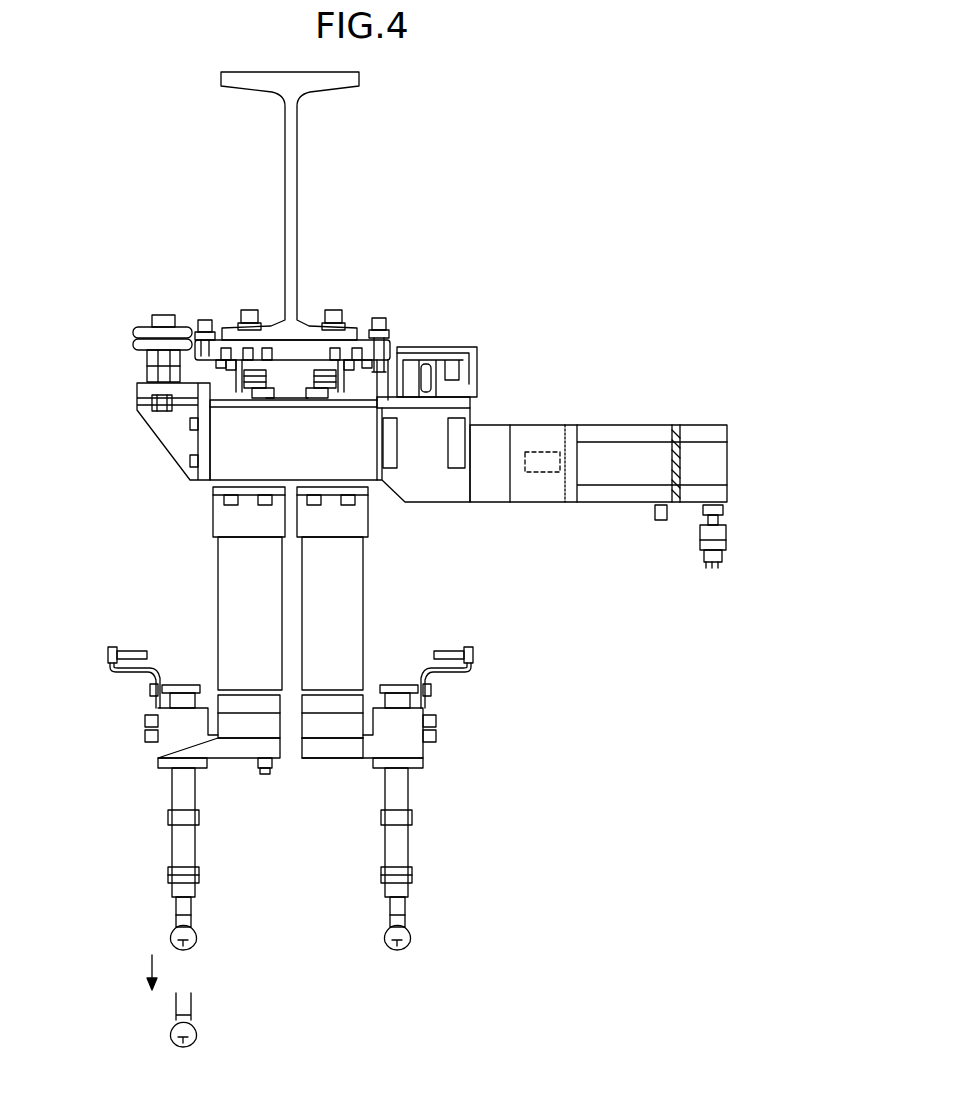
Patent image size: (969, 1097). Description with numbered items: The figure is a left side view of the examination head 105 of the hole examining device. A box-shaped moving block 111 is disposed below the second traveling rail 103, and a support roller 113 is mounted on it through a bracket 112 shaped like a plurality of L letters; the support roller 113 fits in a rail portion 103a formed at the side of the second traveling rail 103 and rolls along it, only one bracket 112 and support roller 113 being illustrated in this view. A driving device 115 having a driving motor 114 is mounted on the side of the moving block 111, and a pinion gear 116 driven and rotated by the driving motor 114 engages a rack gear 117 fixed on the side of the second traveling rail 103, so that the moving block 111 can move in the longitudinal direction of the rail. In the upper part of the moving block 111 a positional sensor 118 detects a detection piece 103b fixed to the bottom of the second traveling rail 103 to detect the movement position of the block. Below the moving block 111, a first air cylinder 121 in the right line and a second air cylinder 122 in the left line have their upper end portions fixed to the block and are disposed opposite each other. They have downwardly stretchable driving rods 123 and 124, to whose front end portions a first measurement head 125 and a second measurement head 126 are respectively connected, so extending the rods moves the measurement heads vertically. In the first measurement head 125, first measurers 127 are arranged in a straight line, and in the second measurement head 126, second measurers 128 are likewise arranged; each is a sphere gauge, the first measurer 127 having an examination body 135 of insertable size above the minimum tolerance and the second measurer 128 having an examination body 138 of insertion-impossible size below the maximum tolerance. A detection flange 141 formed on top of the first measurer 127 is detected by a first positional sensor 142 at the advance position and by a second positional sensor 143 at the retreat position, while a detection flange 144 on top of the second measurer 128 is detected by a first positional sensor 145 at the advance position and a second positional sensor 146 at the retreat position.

The second traveling rail 103 is at (298, 101).
The rail portion 103a is at (202, 328).
The detection piece 103b is at (236, 382).
The examination head 105 is at (474, 266).
The moving block 111 is at (222, 446).
The bracket 112 is at (142, 432).
The support roller 113 is at (145, 326).
The driving motor 114 is at (727, 472).
The driving device 115 is at (468, 490).
The pinion gear 116 is at (478, 370).
The rack gear 117 is at (390, 346).
The positional sensor 118 is at (260, 384).
The first air cylinder 121 is at (352, 605).
The second air cylinder 122 is at (232, 565).
The driving rod 123 is at (330, 733).
The driving rod 124 is at (242, 733).
The first measurement head 125 is at (420, 756).
The second measurement head 126 is at (158, 756).
The first measurer 127 is at (408, 855).
The second measurer 128 is at (172, 855).
The examination body 135 is at (412, 940).
The examination body 138 is at (198, 940).
The detection flange 141 is at (399, 686).
The first positional sensor 142 is at (431, 690).
The second positional sensor 143 is at (471, 645).
The detection flange 144 is at (186, 686).
The first positional sensor 145 is at (150, 690).
The second positional sensor 146 is at (112, 645).